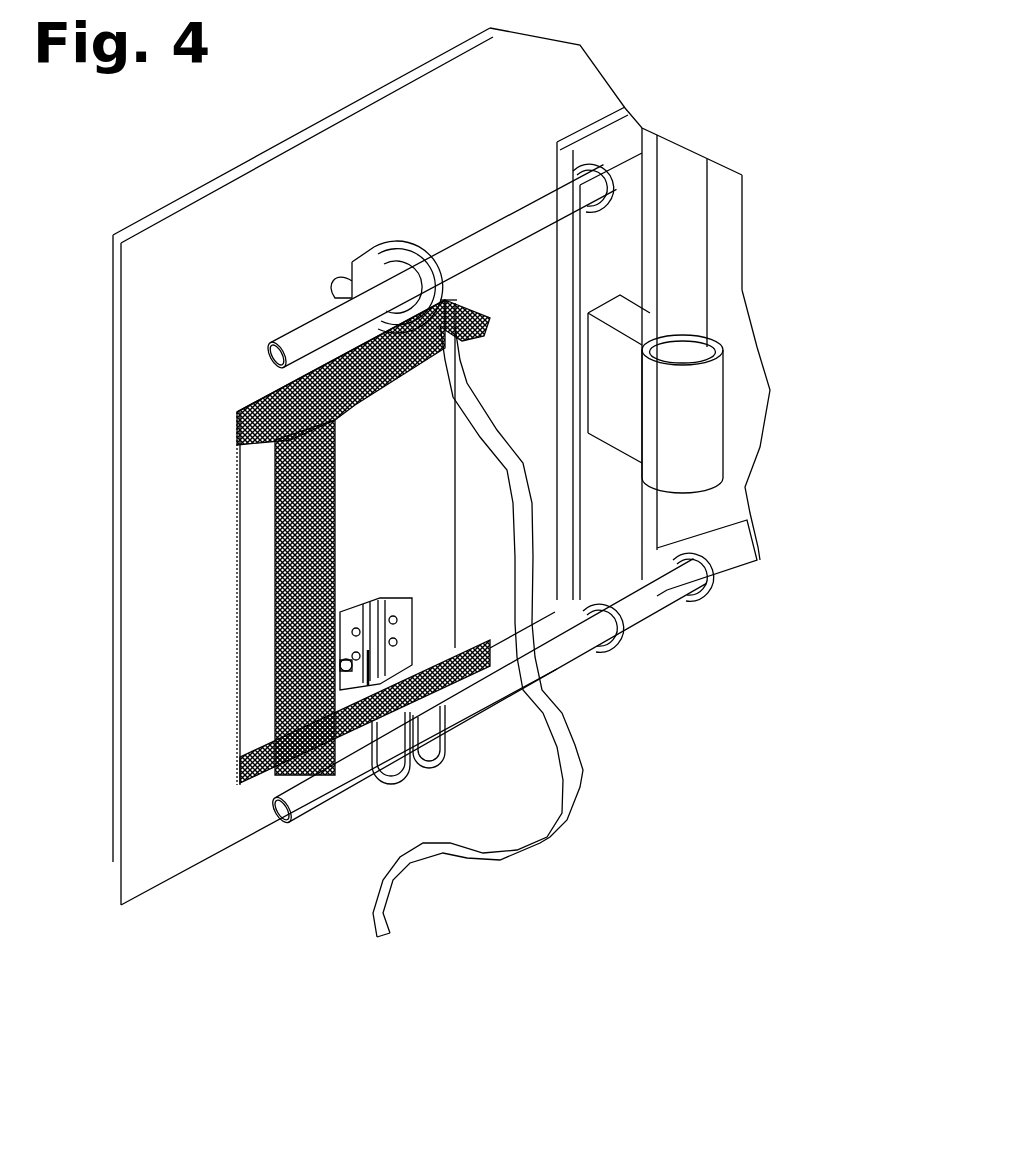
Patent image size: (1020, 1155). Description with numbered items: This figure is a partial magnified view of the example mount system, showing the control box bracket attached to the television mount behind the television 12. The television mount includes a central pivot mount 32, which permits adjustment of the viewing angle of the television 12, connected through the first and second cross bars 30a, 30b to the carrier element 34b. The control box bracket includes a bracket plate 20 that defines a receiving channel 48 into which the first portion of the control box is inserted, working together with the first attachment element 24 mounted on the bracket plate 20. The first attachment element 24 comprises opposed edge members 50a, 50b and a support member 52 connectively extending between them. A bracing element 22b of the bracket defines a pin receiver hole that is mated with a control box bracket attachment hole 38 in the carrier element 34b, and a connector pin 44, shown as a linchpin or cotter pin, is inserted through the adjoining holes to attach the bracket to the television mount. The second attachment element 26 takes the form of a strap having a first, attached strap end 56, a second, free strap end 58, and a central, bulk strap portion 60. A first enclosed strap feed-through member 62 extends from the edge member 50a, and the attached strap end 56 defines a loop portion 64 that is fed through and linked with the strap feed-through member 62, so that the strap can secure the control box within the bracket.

The television 12 is at (147, 278).
The bracket plate 20 is at (236, 566).
The bracing element 22b is at (373, 660).
The first attachment element 24 is at (257, 438).
The second attachment element 26 is at (534, 658).
The first cross bar 30a is at (282, 338).
The second cross bar 30b is at (578, 660).
The central pivot mount 32 is at (722, 412).
The carrier element 34b is at (380, 245).
The control box bracket attachment hole 38 is at (355, 625).
The connector pin 44 is at (345, 662).
The receiving channel 48 is at (258, 624).
The edge member 50a is at (470, 330).
The edge member 50b is at (255, 780).
The support member 52 is at (272, 503).
The attached strap end 56 is at (459, 377).
The free strap end 58 is at (383, 946).
The bulk strap portion 60 is at (585, 776).
The first enclosed strap feed-through member 62 is at (430, 330).
The loop portion 64 is at (447, 328).